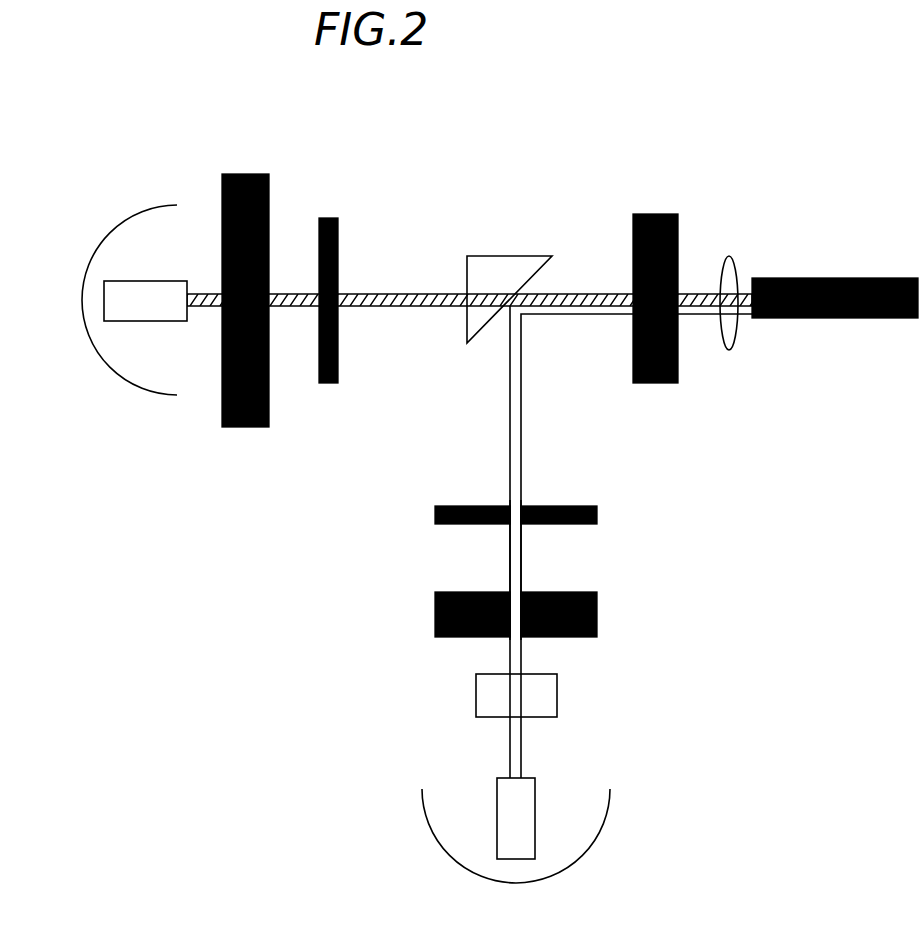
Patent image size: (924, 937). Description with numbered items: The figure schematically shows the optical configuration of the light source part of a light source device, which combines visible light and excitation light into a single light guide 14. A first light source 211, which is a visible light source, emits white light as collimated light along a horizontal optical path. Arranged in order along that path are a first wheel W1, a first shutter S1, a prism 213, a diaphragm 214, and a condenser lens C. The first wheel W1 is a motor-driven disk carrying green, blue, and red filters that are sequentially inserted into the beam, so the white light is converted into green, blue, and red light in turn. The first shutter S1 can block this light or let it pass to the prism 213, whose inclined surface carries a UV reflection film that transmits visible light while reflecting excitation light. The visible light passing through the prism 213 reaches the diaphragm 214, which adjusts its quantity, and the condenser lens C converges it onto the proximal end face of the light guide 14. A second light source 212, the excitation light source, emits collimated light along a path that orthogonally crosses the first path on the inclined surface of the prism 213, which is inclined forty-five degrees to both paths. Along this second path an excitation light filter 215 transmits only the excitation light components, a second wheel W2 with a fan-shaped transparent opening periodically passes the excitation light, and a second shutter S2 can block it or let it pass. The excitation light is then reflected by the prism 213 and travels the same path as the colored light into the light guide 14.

The first light source 211 is at (94, 347).
The first wheel W1 is at (246, 174).
The first shutter S1 is at (329, 218).
The prism 213 is at (513, 256).
The diaphragm 214 is at (660, 214).
The condenser lens C is at (729, 256).
The light guide 14 is at (838, 278).
The second shutter S2 is at (435, 512).
The second wheel W2 is at (435, 614).
The excitation light filter 215 is at (476, 696).
The second light source 212 is at (556, 874).